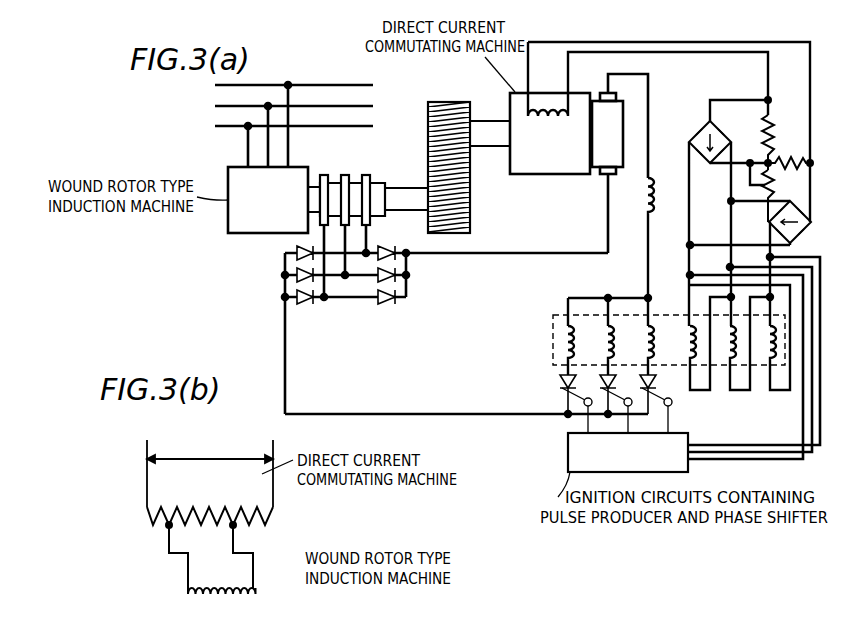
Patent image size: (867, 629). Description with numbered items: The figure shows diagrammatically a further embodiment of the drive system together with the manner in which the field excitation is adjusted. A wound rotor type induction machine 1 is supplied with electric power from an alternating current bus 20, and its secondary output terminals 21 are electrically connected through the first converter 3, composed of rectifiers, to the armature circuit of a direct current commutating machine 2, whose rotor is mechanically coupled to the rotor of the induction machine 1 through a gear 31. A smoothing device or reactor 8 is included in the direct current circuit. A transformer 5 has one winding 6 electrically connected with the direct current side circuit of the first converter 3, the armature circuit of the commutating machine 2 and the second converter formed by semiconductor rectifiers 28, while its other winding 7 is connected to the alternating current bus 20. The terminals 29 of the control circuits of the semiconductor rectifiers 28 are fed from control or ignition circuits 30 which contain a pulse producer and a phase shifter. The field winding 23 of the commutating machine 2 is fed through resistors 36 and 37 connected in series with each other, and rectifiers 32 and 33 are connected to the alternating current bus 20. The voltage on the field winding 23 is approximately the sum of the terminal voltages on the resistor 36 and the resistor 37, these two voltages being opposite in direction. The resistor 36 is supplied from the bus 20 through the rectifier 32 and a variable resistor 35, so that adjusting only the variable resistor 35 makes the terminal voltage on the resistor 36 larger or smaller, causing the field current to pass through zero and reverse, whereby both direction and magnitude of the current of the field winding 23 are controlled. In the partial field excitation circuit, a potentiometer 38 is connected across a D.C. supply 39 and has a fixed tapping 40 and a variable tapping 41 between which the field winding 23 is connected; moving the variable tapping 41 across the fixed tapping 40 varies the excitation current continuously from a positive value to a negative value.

In FIG. 3A, the wound rotor type induction machine 1 is at (268, 200).
In FIG. 3A, the direct current commutating machine 2 is at (579, 163).
In FIG. 3A, the first converter 3 is at (396, 297).
In FIG. 3A, the transformer 5 is at (668, 315).
In FIG. 3A, the winding of transformer 6 is at (560, 340).
In FIG. 3A, the other winding of transformer 7 is at (730, 364).
In FIG. 3A, the smoothing device or reactor 8 is at (660, 238).
In FIG. 3A, the alternating current bus 20 is at (328, 126).
In FIG. 3A, the secondary output terminals 21 is at (366, 175).
In FIG. 3A, the field winding 23 is at (669, 132).
In FIG. 3B, the field winding 23 is at (221, 597).
In FIG. 3A, the semiconductor rectifiers 28 is at (560, 381).
In FIG. 3A, the terminals of control circuits 29 is at (671, 405).
In FIG. 3A, the control (ignition) circuits 30 is at (628, 452).
In FIG. 3A, the gear 31 is at (435, 102).
In FIG. 3A, the rectifier 32 is at (806, 212).
In FIG. 3A, the rectifier 33 is at (700, 128).
In FIG. 3A, the variable resistor 35 is at (776, 181).
In FIG. 3A, the resistor 36 is at (787, 160).
In FIG. 3A, the resistor 37 is at (773, 128).
In FIG. 3B, the potentiometer 38 is at (266, 529).
In FIG. 3B, the D.C. supply 39 is at (147, 441).
In FIG. 3B, the fixed tapping 40 is at (167, 526).
In FIG. 3B, the variable tapping 41 is at (232, 526).